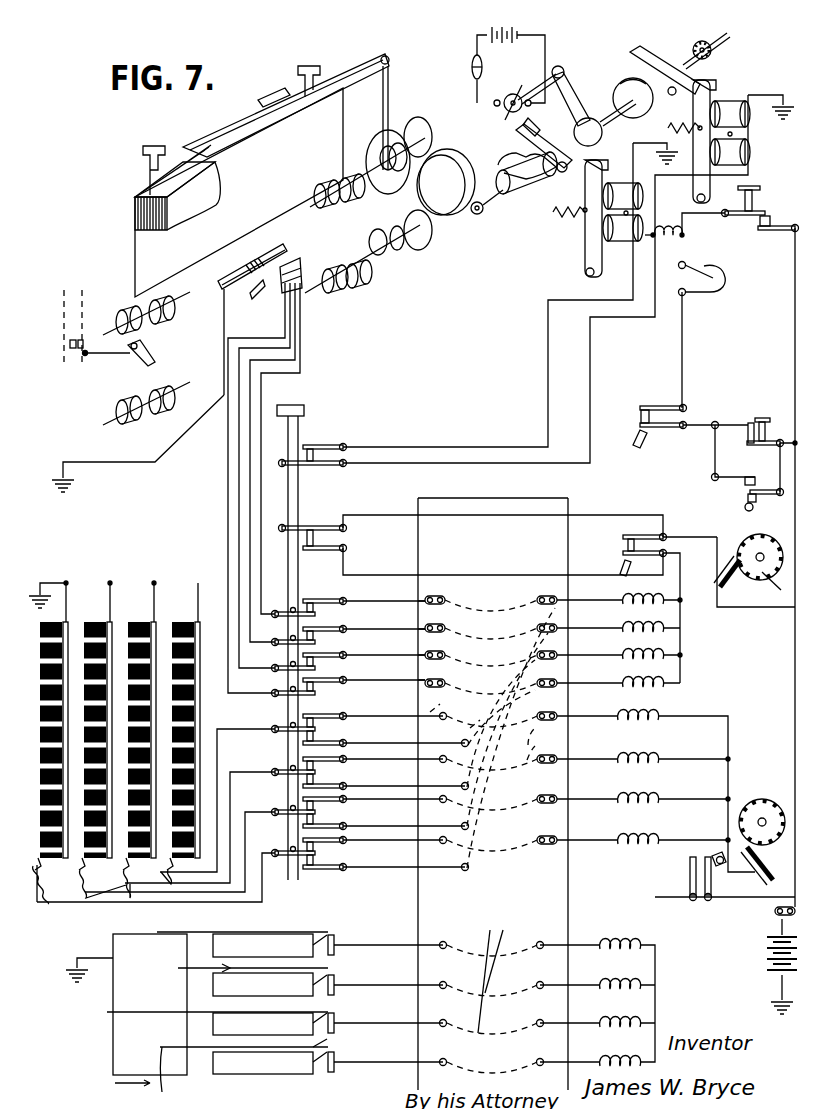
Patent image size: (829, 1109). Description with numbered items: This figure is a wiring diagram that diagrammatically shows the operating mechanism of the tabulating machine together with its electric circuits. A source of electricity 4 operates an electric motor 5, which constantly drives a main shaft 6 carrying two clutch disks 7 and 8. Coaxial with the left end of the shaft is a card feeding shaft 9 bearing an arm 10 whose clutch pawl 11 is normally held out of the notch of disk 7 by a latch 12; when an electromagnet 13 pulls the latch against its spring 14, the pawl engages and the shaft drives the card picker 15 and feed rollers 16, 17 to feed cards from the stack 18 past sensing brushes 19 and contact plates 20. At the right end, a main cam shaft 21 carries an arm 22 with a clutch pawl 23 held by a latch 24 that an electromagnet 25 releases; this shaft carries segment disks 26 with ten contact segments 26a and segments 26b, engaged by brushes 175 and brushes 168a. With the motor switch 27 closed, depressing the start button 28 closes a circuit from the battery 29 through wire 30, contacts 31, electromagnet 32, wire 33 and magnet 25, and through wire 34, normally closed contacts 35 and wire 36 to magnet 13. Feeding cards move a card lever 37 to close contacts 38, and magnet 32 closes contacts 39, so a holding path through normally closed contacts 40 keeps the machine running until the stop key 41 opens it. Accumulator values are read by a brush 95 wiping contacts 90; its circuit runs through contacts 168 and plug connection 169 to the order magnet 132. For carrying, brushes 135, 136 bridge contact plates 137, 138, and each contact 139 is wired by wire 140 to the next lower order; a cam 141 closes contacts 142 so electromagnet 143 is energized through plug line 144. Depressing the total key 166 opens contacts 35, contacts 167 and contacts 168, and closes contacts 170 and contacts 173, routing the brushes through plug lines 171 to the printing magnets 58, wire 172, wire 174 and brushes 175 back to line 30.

The source of electricity 4 is at (518, 27).
The electric motor 5 is at (521, 88).
The main shaft 6 is at (604, 110).
The clutch disk 7 is at (507, 162).
The clutch disk 8 is at (624, 84).
The card feeding shaft 9 is at (485, 212).
The arm 10 is at (530, 196).
The clutch pawl 11 is at (534, 136).
The latch 12 is at (583, 238).
The electromagnet 13 is at (622, 240).
The spring 14 is at (566, 223).
The card picker 15 is at (237, 118).
The feed roller 16 is at (328, 196).
The feed roller 17 is at (328, 280).
The card stack 18 is at (140, 212).
The sensing brush 19 is at (276, 270).
The contact plate 20 is at (297, 263).
The main cam shaft 21 is at (688, 58).
The arm 22 is at (671, 129).
The clutch pawl 23 is at (665, 52).
The latch 24 is at (710, 84).
The electromagnet 25 is at (730, 100).
The segment disk 26 is at (713, 50).
The contact segment 26a is at (758, 534).
The segment 26b is at (756, 798).
The motor switch 27 is at (470, 66).
The start switch or button 28 is at (760, 195).
The battery 29 is at (766, 959).
The wire 30 is at (795, 664).
The contacts 31 is at (768, 222).
The electromagnet 32 is at (678, 234).
The wire 33 is at (657, 176).
The wire 34 is at (590, 360).
The contacts 35 is at (319, 448).
The wire 36 is at (548, 352).
The card lever 37 is at (156, 356).
The contacts 38 is at (68, 360).
The contacts 39 is at (709, 266).
The contacts 40 is at (743, 436).
The stop key 41 is at (773, 430).
The printing magnet 58 is at (673, 616).
The contacts 90 is at (185, 722).
The brush 95 is at (30, 888).
The magnet 132 is at (654, 760).
The brush 135 is at (246, 934).
The brush 136 is at (158, 934).
The contact plate 137 is at (118, 1057).
The contact plate 138 is at (263, 1004).
The contact 139 is at (336, 936).
The wire 140 is at (336, 1046).
The cam 141 is at (710, 858).
The contacts 142 is at (688, 880).
The electromagnet 143 is at (605, 1024).
The plug line 144 is at (486, 971).
The total key 166 is at (296, 410).
The contacts 167 is at (325, 607).
The contacts 168 is at (325, 729).
The brushes 168a is at (777, 870).
The plug connection 169 is at (544, 744).
The contacts 170 is at (310, 745).
The plug line 171 is at (468, 706).
The wire 172 is at (456, 588).
The contacts 173 is at (347, 538).
The wire 174 is at (590, 516).
The brush 175 is at (738, 579).